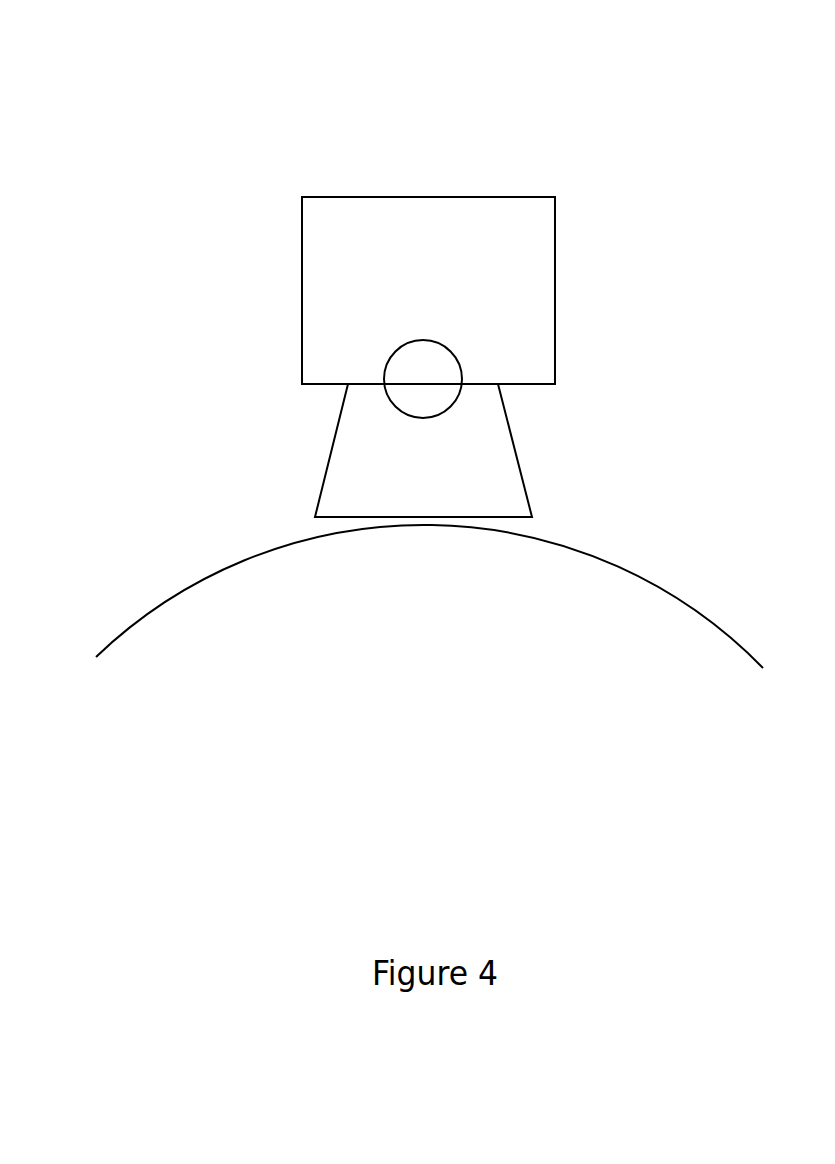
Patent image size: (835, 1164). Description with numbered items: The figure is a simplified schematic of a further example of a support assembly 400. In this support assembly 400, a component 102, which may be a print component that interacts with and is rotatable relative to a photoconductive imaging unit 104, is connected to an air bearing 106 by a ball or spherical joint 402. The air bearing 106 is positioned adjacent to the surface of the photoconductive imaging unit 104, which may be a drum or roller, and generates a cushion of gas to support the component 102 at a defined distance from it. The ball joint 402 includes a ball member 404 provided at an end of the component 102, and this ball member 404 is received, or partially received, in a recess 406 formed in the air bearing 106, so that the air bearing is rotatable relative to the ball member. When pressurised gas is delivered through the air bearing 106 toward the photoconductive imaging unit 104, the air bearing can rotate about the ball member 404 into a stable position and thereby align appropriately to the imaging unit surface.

The support assembly 400 is at (190, 125).
The component 102 is at (532, 240).
The photoconductive imaging unit 104 is at (448, 766).
The air bearing 106 is at (503, 443).
The ball joint 402 is at (370, 356).
The ball member 404 is at (447, 364).
The recess 406 is at (417, 338).